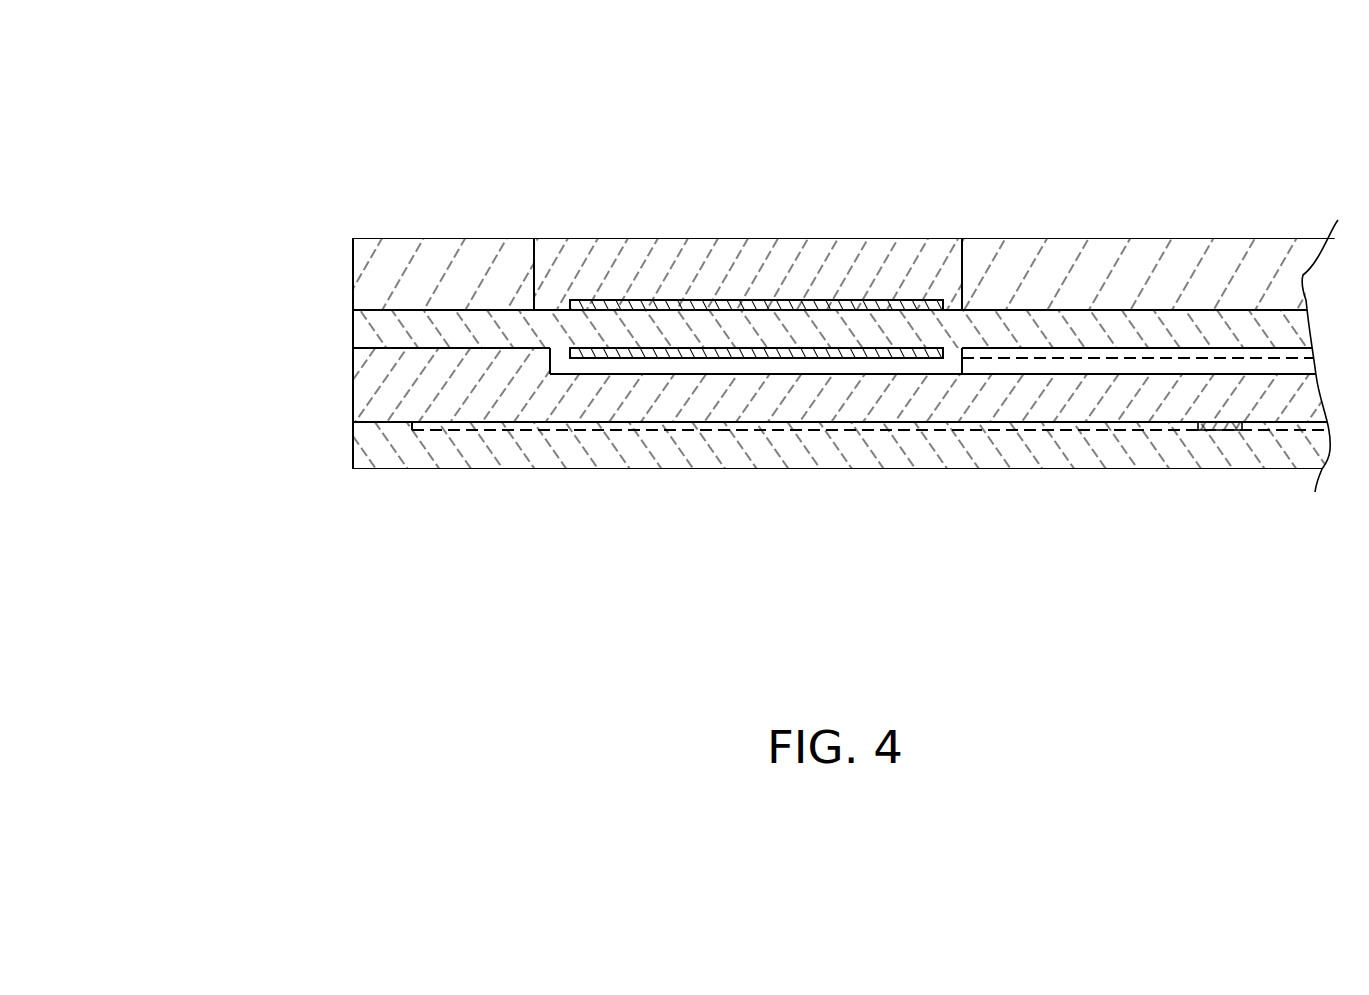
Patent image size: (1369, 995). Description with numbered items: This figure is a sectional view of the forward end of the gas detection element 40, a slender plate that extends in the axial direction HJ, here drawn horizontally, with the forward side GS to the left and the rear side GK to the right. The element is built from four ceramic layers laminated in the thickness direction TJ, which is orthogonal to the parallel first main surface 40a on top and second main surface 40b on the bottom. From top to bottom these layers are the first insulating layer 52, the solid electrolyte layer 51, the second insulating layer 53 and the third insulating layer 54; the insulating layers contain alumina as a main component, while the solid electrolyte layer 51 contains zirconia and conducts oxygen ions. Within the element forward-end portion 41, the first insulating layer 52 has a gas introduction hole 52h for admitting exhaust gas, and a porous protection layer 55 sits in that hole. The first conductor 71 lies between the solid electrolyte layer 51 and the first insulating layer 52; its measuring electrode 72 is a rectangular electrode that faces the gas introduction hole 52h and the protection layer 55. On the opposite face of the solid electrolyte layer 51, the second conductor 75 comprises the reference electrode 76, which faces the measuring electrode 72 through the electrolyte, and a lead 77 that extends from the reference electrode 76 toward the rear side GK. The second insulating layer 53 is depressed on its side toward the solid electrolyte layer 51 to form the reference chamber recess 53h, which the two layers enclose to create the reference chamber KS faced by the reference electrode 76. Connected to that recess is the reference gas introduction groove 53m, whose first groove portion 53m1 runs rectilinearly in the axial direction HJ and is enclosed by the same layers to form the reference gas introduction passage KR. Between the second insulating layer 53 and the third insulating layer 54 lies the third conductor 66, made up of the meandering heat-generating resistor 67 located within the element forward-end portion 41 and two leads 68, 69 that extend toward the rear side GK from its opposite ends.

The gas detection element 40 is at (1207, 111).
The first main surface 40a is at (425, 238).
The second main surface 40b is at (450, 469).
The element forward-end portion 41 is at (510, 238).
The solid electrolyte layer 51 is at (353, 338).
The first insulating layer 52 is at (353, 273).
The gas introduction hole 52h is at (962, 270).
The second insulating layer 53 is at (353, 375).
The reference chamber recess 53h is at (757, 367).
The reference gas introduction groove 53m is at (1160, 368).
The first groove portion 53m1 is at (1220, 426).
The third insulating layer 54 is at (353, 434).
The protection layer 55 is at (730, 250).
The third conductor 66 is at (872, 430).
The heat-generating resistor 67 is at (850, 430).
The lead 68 is at (1300, 426).
The lead 69 is at (1147, 358).
The first conductor 71 is at (756, 305).
The measuring electrode 72 is at (628, 300).
The second conductor 75 is at (756, 353).
The reference electrode 76 is at (615, 358).
The lead 77 is at (993, 350).
The forward side GS is at (590, 80).
The axial direction HJ is at (704, 80).
The rear side GK is at (865, 80).
The reference chamber KS is at (696, 378).
The reference gas introduction passage KR is at (1112, 370).
The thickness direction TJ is at (176, 300).